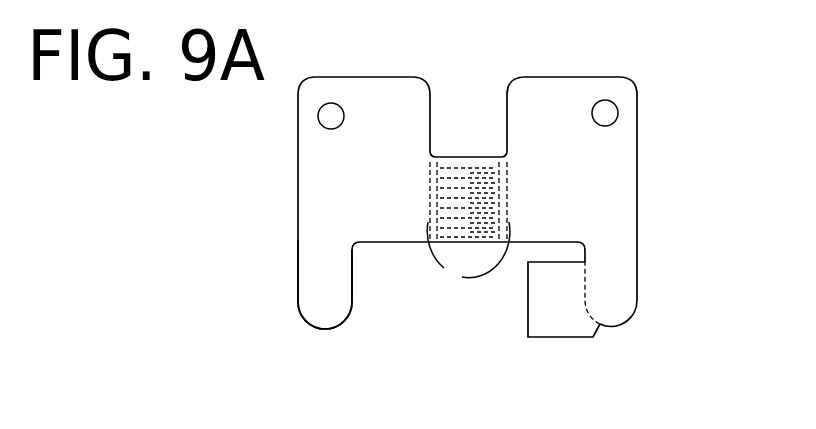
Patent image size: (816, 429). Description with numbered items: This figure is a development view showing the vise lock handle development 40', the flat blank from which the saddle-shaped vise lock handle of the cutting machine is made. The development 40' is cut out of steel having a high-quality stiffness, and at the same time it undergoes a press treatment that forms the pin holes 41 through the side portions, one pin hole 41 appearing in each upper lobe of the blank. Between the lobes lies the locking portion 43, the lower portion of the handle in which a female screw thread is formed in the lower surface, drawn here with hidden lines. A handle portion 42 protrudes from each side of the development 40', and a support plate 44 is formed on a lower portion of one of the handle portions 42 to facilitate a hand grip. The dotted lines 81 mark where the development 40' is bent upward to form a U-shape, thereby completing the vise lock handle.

The vise lock handle development 40' is at (533, 203).
The pin hole 41 is at (333, 116).
The handle portion 42 is at (328, 294).
The locking portion 43 is at (458, 187).
The support plate 44 is at (563, 325).
The dotted line 81 is at (678, 288).